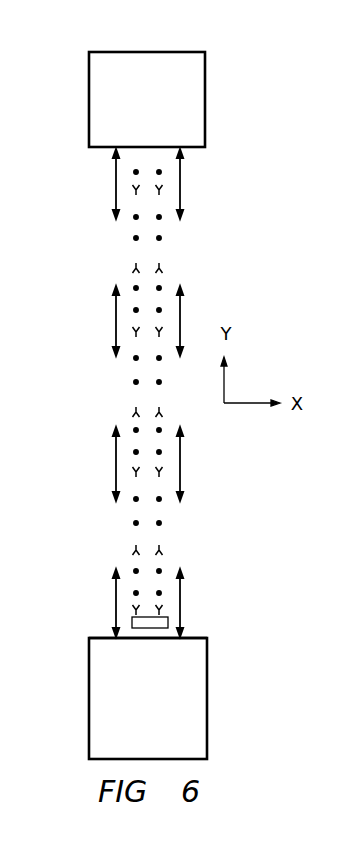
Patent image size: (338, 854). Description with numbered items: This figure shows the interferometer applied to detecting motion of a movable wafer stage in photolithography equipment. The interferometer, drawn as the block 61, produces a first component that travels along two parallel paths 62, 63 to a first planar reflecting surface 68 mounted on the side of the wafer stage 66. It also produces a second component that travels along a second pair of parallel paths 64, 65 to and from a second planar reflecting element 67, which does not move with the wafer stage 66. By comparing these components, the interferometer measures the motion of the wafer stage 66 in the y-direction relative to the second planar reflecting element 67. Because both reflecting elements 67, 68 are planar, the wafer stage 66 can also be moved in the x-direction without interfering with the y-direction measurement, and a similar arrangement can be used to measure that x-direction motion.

The light source / emitter unit 61 is at (195, 86).
The parallel path 62 is at (115, 185).
The parallel path 63 is at (182, 173).
The parallel path 64 is at (132, 267).
The parallel path 65 is at (163, 267).
The wafer stage 66 is at (198, 690).
The second planar reflecting element 67 is at (165, 618).
The first planar reflecting surface 68 is at (102, 637).